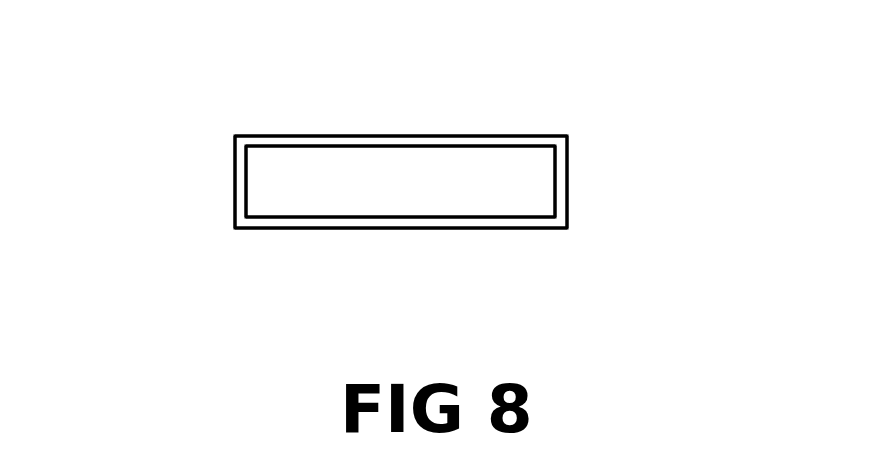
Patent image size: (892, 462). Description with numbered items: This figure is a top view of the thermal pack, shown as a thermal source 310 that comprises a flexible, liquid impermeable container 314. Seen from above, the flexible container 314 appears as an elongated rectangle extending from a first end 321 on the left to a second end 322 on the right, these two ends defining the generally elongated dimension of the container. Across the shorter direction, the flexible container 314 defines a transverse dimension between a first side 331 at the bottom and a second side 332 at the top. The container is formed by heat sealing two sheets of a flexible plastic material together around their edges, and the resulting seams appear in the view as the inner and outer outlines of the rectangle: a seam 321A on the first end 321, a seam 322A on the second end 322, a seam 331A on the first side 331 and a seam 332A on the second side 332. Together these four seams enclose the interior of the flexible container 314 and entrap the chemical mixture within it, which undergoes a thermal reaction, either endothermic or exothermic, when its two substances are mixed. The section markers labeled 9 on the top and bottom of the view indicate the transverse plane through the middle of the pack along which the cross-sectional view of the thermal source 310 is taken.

The thermal source 310 is at (560, 259).
The flexible container 314 is at (285, 167).
The first end 321 is at (233, 198).
The seam on the first end 321A is at (240, 227).
The second end 322 is at (567, 215).
The seam on the second end 322A is at (568, 157).
The first side 331 is at (473, 229).
The seam on the first side 331A is at (328, 219).
The second side 332 is at (460, 147).
The seam on the second side 332A is at (333, 136).
The section line 9- 9 is at (393, 127).